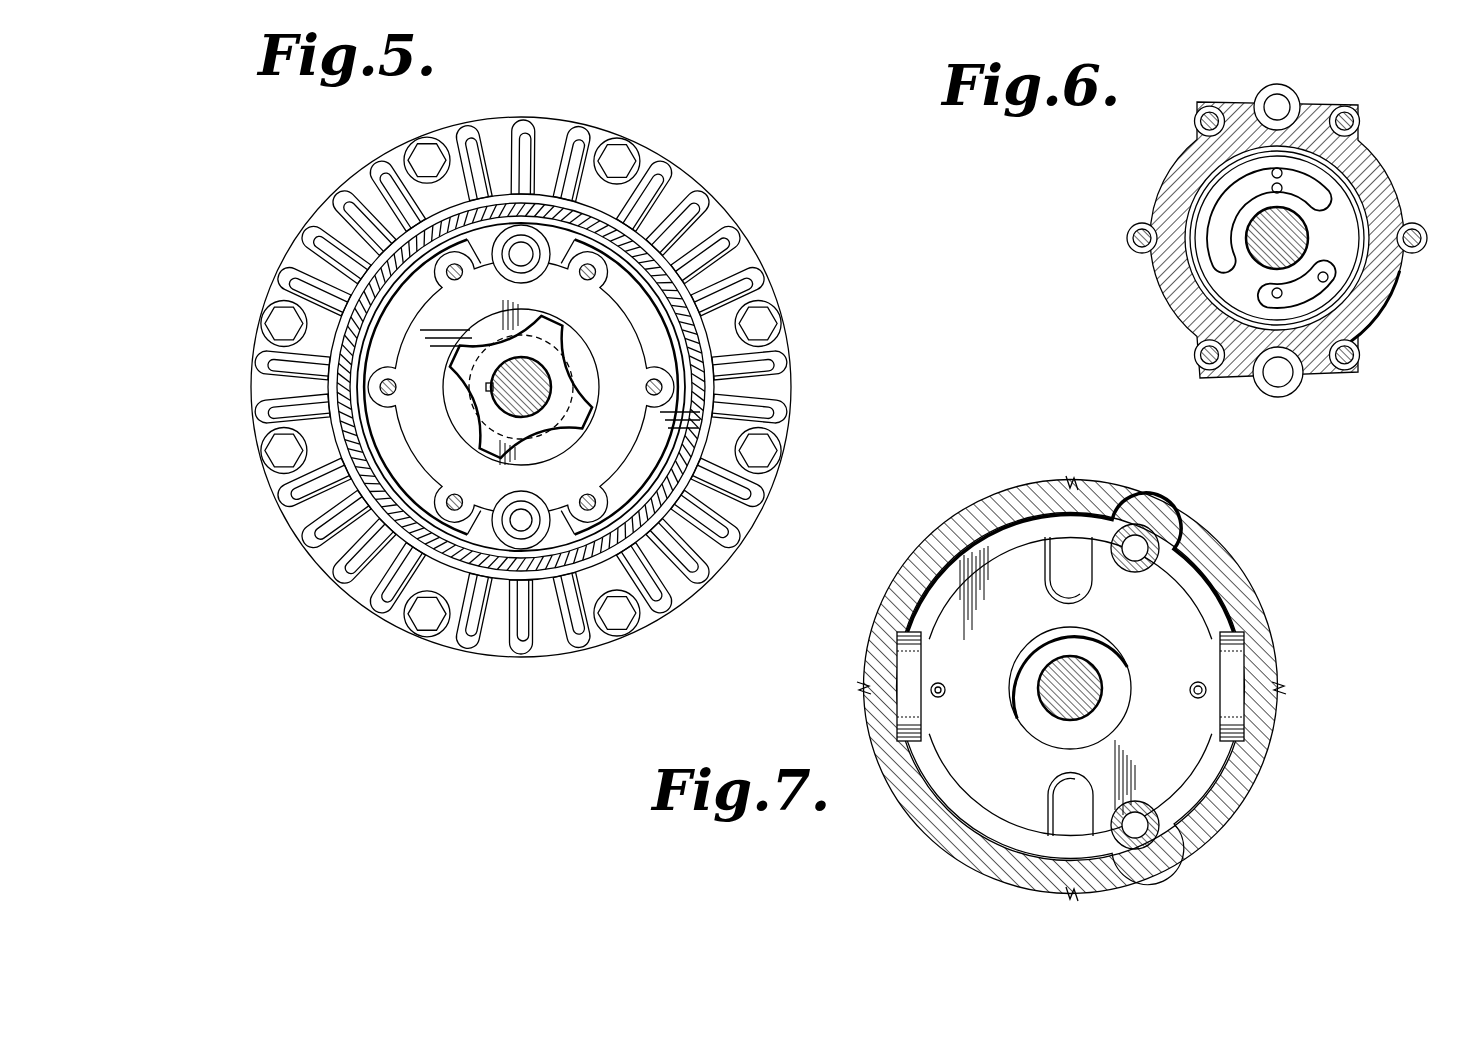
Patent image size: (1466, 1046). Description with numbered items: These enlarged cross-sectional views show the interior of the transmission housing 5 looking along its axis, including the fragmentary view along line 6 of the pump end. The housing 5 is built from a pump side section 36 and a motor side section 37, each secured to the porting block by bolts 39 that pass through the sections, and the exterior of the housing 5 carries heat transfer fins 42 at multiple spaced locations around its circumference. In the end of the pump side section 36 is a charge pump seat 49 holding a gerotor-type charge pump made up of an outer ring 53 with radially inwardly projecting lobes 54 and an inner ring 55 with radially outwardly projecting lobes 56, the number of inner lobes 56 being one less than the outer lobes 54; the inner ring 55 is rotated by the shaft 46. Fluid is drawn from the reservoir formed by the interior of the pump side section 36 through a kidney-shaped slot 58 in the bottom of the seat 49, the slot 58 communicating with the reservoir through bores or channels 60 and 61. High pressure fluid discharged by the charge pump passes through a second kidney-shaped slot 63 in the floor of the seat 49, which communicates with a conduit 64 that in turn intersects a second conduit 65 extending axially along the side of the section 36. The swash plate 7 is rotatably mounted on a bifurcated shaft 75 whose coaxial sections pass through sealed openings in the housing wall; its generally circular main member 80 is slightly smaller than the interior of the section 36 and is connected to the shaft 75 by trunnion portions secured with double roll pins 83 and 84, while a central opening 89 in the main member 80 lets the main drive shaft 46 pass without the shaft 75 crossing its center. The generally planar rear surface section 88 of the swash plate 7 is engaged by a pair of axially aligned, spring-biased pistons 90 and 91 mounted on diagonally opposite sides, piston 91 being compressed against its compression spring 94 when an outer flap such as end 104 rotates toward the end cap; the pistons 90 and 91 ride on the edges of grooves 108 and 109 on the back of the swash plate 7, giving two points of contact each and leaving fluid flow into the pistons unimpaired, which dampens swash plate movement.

In FIG. 5, the transmission housing 5 is at (768, 284).
In FIG. 5, the retaining ring 6 is at (593, 340).
In FIG. 7, the swash plate 7 is at (1212, 606).
In FIG. 6, the pump side section 36 is at (1406, 217).
In FIG. 5, the motor side section 37 is at (713, 196).
In FIG. 5, the bolts 39 is at (782, 325).
In FIG. 5, the heat transfer fins 42 is at (790, 368).
In FIG. 5, the shaft 46 is at (549, 403).
In FIG. 6, the shaft 46 is at (1304, 242).
In FIG. 7, the shaft 46 is at (1098, 674).
In FIG. 6, the charge pump seat 49 is at (1352, 200).
In FIG. 5, the outer ring 53 is at (452, 405).
In FIG. 5, the radially inwardly projecting lobes 54 is at (488, 388).
In FIG. 5, the inner ring 55 is at (506, 466).
In FIG. 5, the radially outwardly projecting lobes 56 is at (468, 430).
In FIG. 5, the kidney-shaped slot 58 is at (476, 330).
In FIG. 6, the kidney-shaped slot 58 is at (1233, 192).
In FIG. 6, the bore or channel 60 is at (1272, 168).
In FIG. 6, the bore or channel 61 is at (1282, 184).
In FIG. 5, the second kidney-shaped slot 63 is at (562, 406).
In FIG. 6, the second kidney-shaped slot 63 is at (1326, 274).
In FIG. 6, the conduit 64 is at (1274, 298).
In FIG. 7, the second conduit 65 is at (1142, 540).
In FIG. 7, the bifurcated shaft 75 is at (1217, 746).
In FIG. 7, the main plate or member 80 is at (955, 786).
In FIG. 7, the double roll pin 83 is at (943, 685).
In FIG. 7, the double roll pin 84 is at (1192, 696).
In FIG. 7, the rear surface section 88 is at (986, 811).
In FIG. 7, the central opening 89 is at (1034, 729).
In FIG. 5, the piston 90 is at (531, 507).
In FIG. 6, the piston 90 is at (1260, 388).
In FIG. 5, the piston 91 is at (511, 275).
In FIG. 6, the piston 91 is at (1303, 102).
In FIG. 5, the compression spring 94 is at (530, 266).
In FIG. 6, the compression spring 94 is at (1297, 392).
In FIG. 7, the end 104 is at (1057, 521).
In FIG. 7, the groove 108 is at (1055, 794).
In FIG. 7, the groove 109 is at (1056, 578).